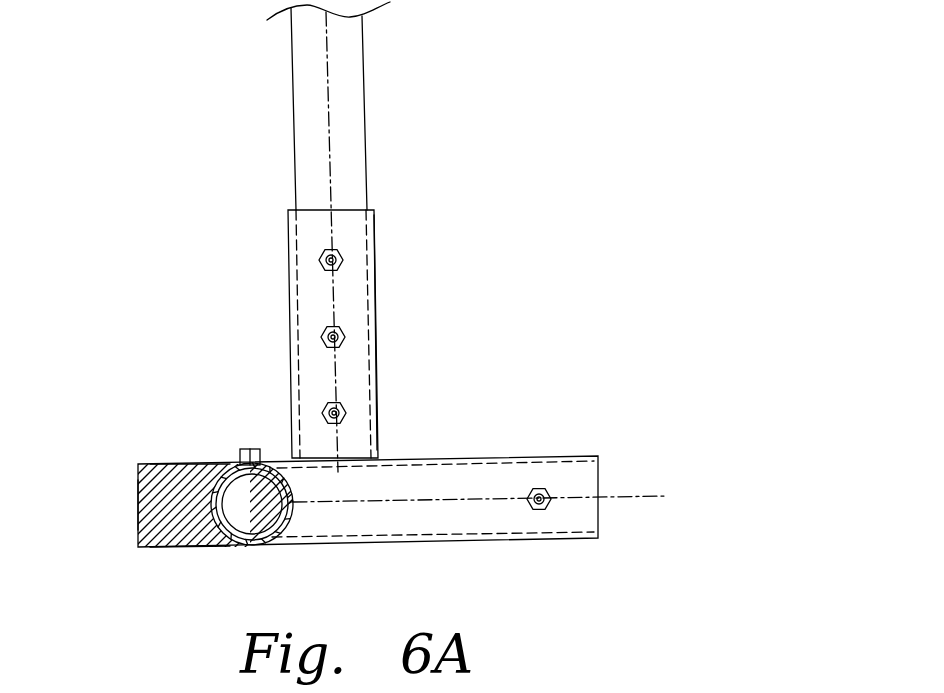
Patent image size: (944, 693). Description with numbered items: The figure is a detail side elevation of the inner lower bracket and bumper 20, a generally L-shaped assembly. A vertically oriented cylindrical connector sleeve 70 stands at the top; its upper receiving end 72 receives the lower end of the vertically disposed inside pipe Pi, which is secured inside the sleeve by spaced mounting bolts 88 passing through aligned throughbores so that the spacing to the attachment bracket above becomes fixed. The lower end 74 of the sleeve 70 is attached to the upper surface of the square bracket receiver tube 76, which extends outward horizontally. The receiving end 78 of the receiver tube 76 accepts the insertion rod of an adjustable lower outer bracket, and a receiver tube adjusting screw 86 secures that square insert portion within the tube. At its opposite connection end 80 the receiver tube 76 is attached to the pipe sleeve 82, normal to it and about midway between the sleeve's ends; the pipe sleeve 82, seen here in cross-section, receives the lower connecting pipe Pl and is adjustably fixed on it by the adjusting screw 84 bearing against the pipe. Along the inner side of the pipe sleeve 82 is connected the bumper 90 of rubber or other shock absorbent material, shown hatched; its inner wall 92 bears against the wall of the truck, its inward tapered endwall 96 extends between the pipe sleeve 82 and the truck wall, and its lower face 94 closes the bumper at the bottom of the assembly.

The inside pipe Pi is at (372, 77).
The inner lower bracket and bumper 20 is at (386, 222).
The cylindrical connector sleeve 70 is at (376, 290).
The upper receiving end 72 is at (345, 205).
The fasteners 88 is at (322, 413).
The square bracket receiver tube 76 is at (497, 457).
The lower end 74 is at (348, 458).
The receiving end 78 is at (600, 487).
The receiver tube adjusting screw 86 is at (548, 488).
The inner wall 92 is at (138, 480).
The inward tapered endwall 96 is at (155, 521).
The bumper 90 is at (190, 455).
The block bottom 94 is at (200, 535).
The adjusting screw 84 is at (246, 449).
The connection end 80 is at (293, 518).
The pipe sleeve 82 is at (238, 548).
The lower connecting pipe Pl is at (222, 548).